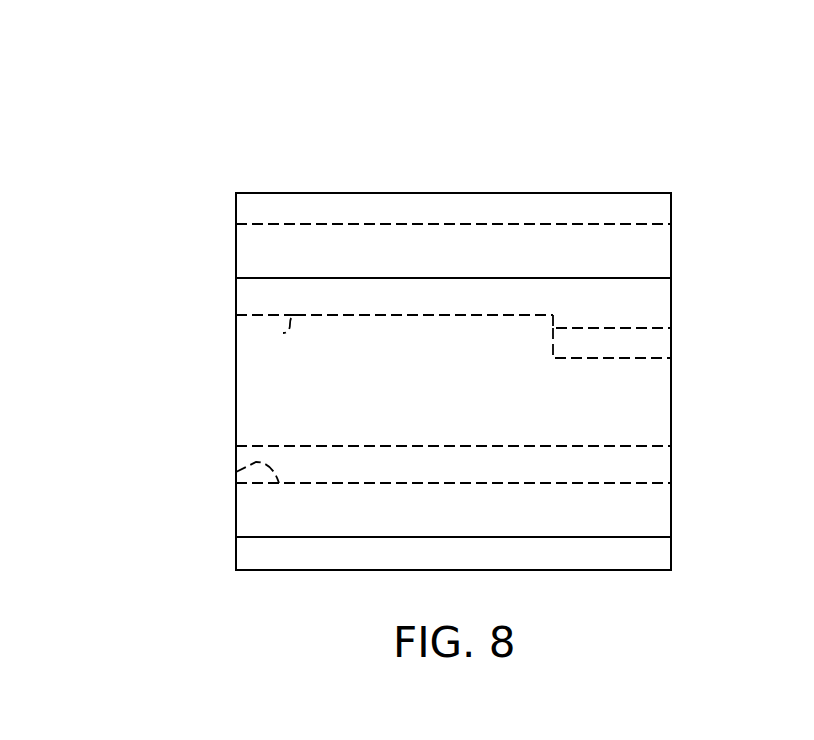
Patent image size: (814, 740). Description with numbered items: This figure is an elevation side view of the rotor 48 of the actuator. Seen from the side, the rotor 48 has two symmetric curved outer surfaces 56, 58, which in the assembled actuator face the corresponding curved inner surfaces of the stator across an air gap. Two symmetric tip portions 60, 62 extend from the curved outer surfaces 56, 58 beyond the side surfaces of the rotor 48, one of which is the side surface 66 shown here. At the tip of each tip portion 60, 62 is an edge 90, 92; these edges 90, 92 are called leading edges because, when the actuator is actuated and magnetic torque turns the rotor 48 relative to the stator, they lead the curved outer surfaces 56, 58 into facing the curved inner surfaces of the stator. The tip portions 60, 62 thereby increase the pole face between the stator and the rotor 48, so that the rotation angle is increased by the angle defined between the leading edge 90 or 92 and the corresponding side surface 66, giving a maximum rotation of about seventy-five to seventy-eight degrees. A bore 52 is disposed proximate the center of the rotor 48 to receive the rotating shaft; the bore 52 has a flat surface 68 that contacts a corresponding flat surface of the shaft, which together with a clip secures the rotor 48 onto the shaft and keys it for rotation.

The rotor 48 is at (660, 163).
The curved outer surface 58 is at (445, 194).
The tip portion 62 is at (236, 247).
The leading edge 92 is at (268, 278).
The bore 52 is at (283, 333).
The flat surface 68 is at (633, 340).
The side surface 66 is at (281, 390).
The leading edge 90 is at (236, 472).
The tip portion 60 is at (236, 524).
The curved outer surface 56 is at (620, 572).